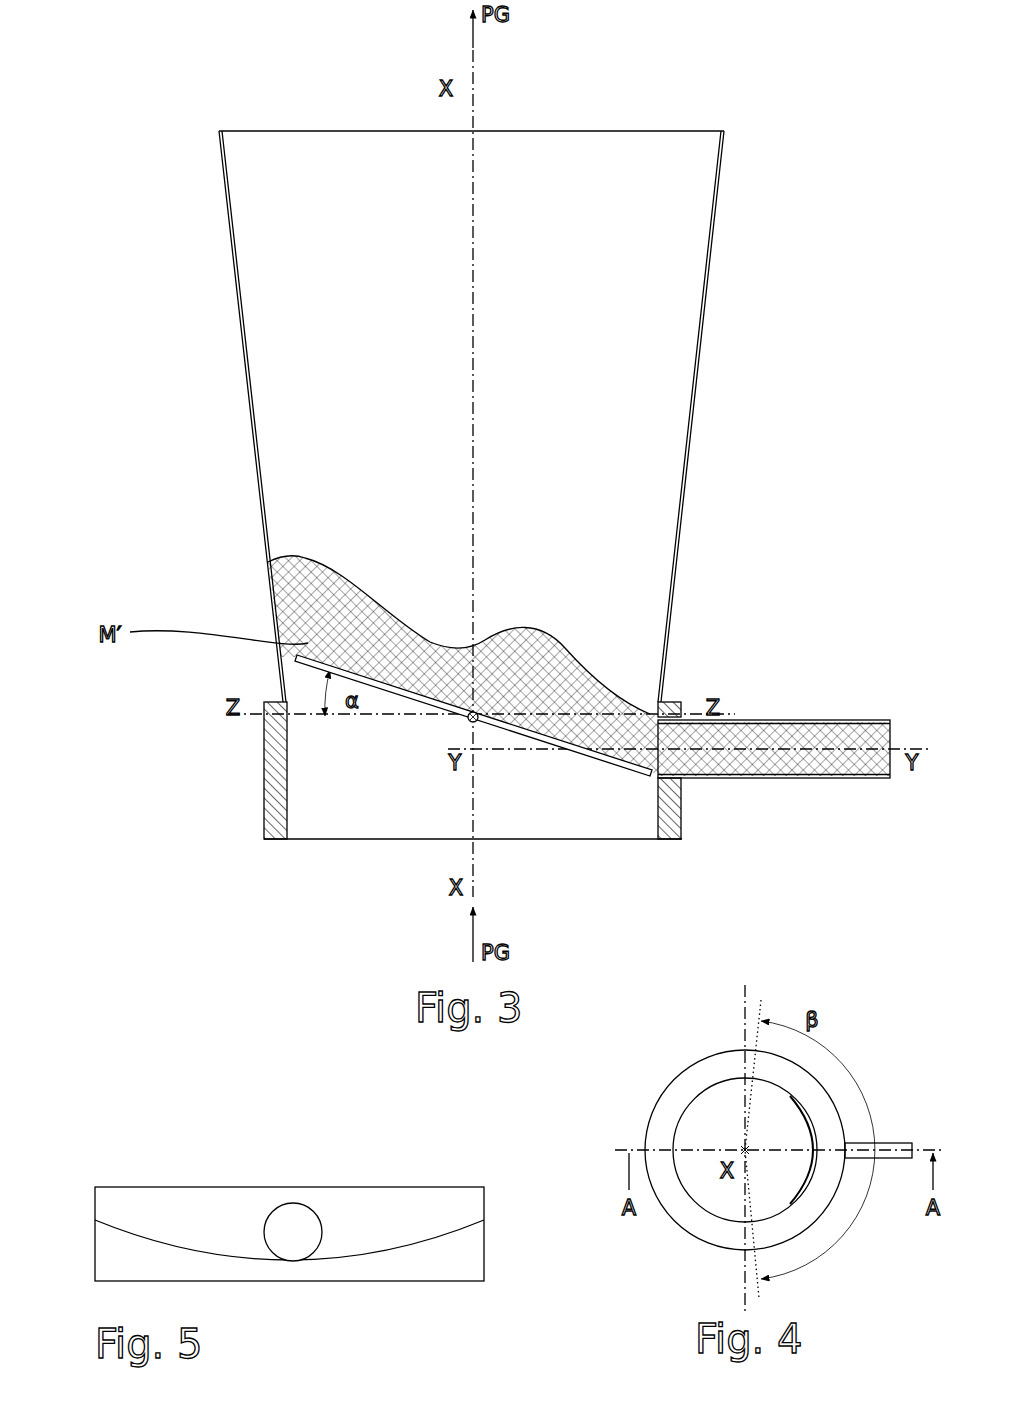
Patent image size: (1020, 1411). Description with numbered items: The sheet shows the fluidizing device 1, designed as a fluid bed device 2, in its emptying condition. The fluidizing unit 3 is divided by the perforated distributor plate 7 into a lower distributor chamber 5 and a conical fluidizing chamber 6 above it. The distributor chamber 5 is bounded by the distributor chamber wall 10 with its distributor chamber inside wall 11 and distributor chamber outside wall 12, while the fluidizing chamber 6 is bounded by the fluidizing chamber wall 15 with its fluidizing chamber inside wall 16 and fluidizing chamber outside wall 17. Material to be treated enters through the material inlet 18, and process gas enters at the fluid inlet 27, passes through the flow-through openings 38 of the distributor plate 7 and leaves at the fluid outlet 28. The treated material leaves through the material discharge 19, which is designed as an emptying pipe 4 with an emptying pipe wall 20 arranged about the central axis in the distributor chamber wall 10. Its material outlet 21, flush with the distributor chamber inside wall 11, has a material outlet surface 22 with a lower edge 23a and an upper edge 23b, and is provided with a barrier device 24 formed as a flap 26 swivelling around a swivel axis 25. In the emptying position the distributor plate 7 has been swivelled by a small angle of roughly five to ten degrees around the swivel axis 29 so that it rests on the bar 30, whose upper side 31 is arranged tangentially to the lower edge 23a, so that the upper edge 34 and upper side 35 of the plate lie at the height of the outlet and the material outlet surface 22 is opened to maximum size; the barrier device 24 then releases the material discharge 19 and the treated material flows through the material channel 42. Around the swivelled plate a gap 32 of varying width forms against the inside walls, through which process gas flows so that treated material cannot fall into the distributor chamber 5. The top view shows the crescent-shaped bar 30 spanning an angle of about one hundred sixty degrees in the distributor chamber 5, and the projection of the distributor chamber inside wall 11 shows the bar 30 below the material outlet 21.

In FIG. 3, the fluidizing device 1 is at (843, 103).
In FIG. 4, the fluidizing device 1 is at (877, 1015).
In FIG. 3, the fluid bed device 2 is at (140, 372).
In FIG. 3, the fluidizing unit 3 is at (537, 485).
In FIG. 4, the fluidizing unit 3 is at (745, 1252).
In FIG. 3, the emptying pipe 4 is at (846, 794).
In FIG. 4, the emptying pipe 4 is at (886, 1166).
In FIG. 3, the distributor chamber 5 is at (686, 806).
In FIG. 4, the distributor chamber 5 is at (703, 1193).
In FIG. 5, the distributor chamber 5 is at (108, 1157).
In FIG. 3, the fluidizing chamber 6 is at (707, 276).
In FIG. 4, the fluidizing chamber 6 is at (829, 1090).
In FIG. 3, the distributor plate 7 is at (537, 728).
In FIG. 3, the distributor chamber wall 10 is at (672, 841).
In FIG. 3, the distributor chamber inside wall 11 is at (290, 823).
In FIG. 4, the distributor chamber inside wall 11 is at (809, 1116).
In FIG. 5, the distributor chamber inside wall 11 is at (437, 1208).
In FIG. 3, the distributor chamber outside wall 12 is at (262, 823).
In FIG. 3, the fluidizing chamber wall 15 is at (722, 175).
In FIG. 3, the fluidizing chamber inside wall 16 is at (718, 170).
In FIG. 4, the fluidizing chamber inside wall 16 is at (661, 1130).
In FIG. 3, the fluidizing chamber outside wall 17 is at (723, 152).
In FIG. 3, the material inlet 18 is at (350, 130).
In FIG. 3, the material discharge 19 is at (745, 720).
In FIG. 4, the material discharge 19 is at (884, 1142).
In FIG. 3, the emptying pipe wall 20 is at (878, 720).
In FIG. 3, the material outlet 21 is at (825, 717).
In FIG. 5, the material outlet 21 is at (319, 1211).
In FIG. 3, the material outlet surface 22 is at (652, 733).
In FIG. 4, the material outlet surface 22 is at (816, 1150).
In FIG. 5, the material outlet surface 22 is at (277, 1217).
In FIG. 3, the lower edge 23a is at (684, 812).
In FIG. 3, the upper edge 23b is at (670, 708).
In FIG. 3, the barrier device 24 is at (718, 719).
In FIG. 3, the swivel axis 25 is at (657, 722).
In FIG. 3, the flap 26 is at (663, 742).
In FIG. 3, the fluid inlet 27 is at (545, 841).
In FIG. 3, the fluid outlet 28 is at (577, 130).
In FIG. 3, the swivel axis 29 is at (470, 722).
In FIG. 4, the swivel axis 29 is at (745, 972).
In FIG. 3, the bar 30 is at (655, 781).
In FIG. 4, the bar 30 is at (798, 1205).
In FIG. 5, the bar 30 is at (458, 1235).
In FIG. 3, the upper side of the bar 31 is at (658, 771).
In FIG. 4, the upper side of the bar 31 is at (816, 1165).
In FIG. 3, the gap 32 is at (288, 662).
In FIG. 3, the upper edge of the distributor plate 34 is at (650, 778).
In FIG. 3, the upper side of the distributor plate 35 is at (372, 676).
In FIG. 3, the flow-through openings 38 is at (497, 727).
In FIG. 3, the material channel 42 is at (879, 740).